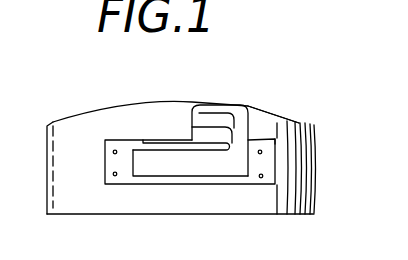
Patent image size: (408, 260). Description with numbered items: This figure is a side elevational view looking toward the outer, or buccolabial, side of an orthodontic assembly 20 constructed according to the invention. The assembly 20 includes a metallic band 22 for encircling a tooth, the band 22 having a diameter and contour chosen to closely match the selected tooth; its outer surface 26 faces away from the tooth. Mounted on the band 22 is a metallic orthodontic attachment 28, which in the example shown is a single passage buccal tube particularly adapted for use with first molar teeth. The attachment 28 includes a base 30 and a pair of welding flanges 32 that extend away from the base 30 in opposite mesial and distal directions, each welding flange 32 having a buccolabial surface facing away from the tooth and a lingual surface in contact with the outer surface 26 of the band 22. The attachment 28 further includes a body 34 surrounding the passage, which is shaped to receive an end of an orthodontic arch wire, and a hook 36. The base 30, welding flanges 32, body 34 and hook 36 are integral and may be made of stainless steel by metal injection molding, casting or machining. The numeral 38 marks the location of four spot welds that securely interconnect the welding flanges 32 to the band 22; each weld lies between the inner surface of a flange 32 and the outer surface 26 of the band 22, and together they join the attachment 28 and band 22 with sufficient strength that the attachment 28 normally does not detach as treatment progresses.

The orthodontic assembly 20 is at (100, 106).
The metallic band 22 is at (314, 213).
The outer surface 26 is at (53, 122).
The orthodontic attachment 28 is at (245, 107).
The base 30 is at (153, 140).
The welding flanges 32 is at (277, 137).
The body 34 is at (167, 170).
The hook 36 is at (212, 106).
The spot welds 38 is at (263, 176).